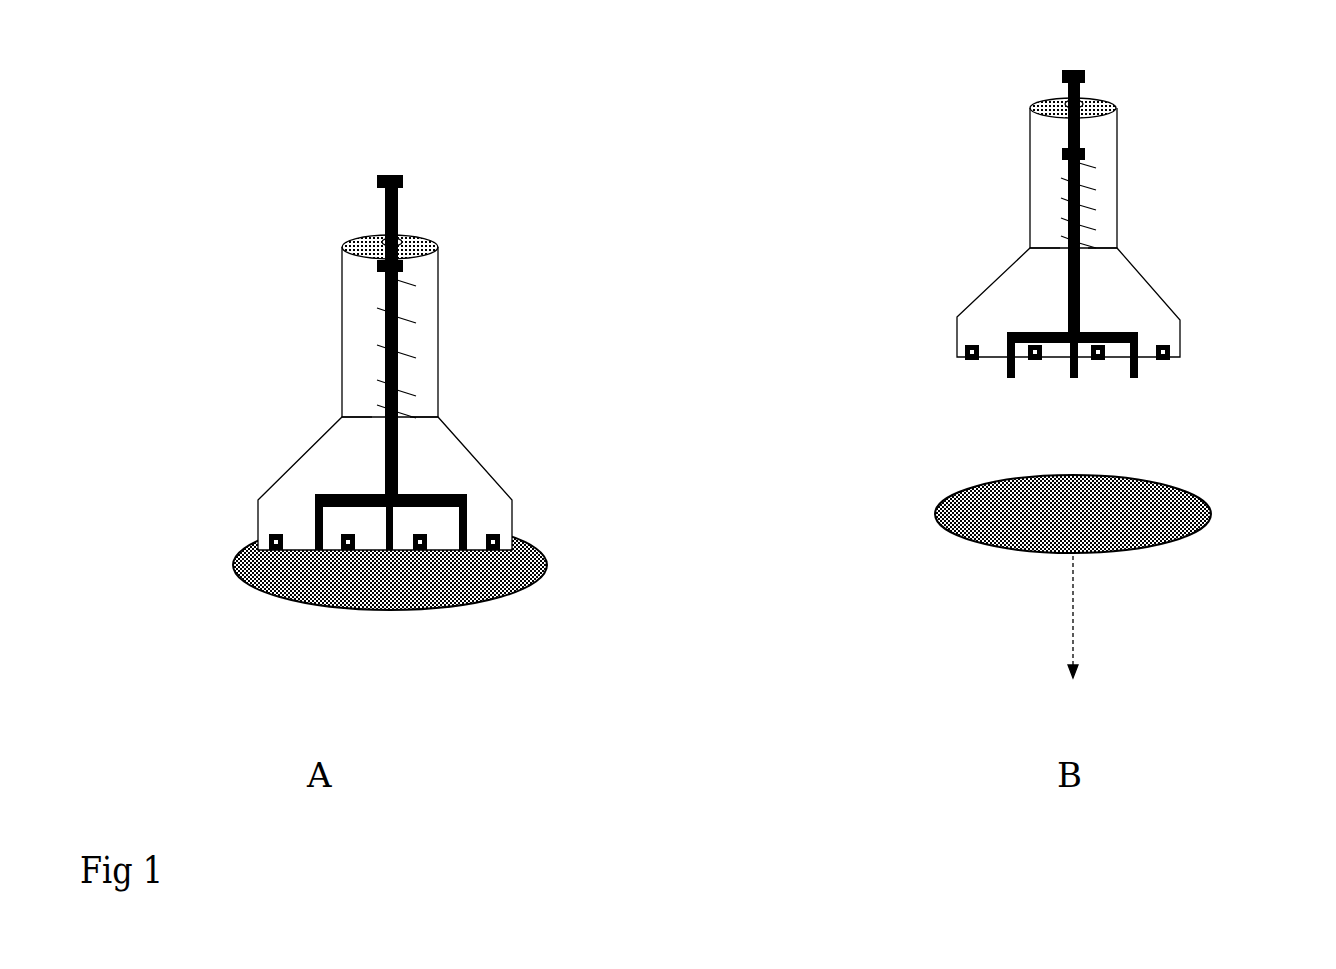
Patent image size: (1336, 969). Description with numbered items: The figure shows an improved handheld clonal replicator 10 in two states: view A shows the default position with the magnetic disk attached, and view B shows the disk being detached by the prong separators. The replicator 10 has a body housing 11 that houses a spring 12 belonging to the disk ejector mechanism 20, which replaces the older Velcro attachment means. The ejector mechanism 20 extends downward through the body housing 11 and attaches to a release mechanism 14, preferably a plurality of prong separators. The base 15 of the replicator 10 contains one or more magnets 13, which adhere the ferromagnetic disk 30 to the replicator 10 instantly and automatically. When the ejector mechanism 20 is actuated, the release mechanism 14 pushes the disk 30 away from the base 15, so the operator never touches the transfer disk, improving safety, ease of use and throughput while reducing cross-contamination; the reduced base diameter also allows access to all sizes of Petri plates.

The clonal replicator 10 is at (472, 313).
The body housing 11 is at (290, 460).
The spring 12 is at (382, 340).
The magnets 13 is at (268, 547).
The release mechanism 14 is at (467, 508).
The base 15 is at (451, 542).
The disk ejector mechanism 20 is at (385, 203).
The ferromagnetic disk 30 is at (354, 593).